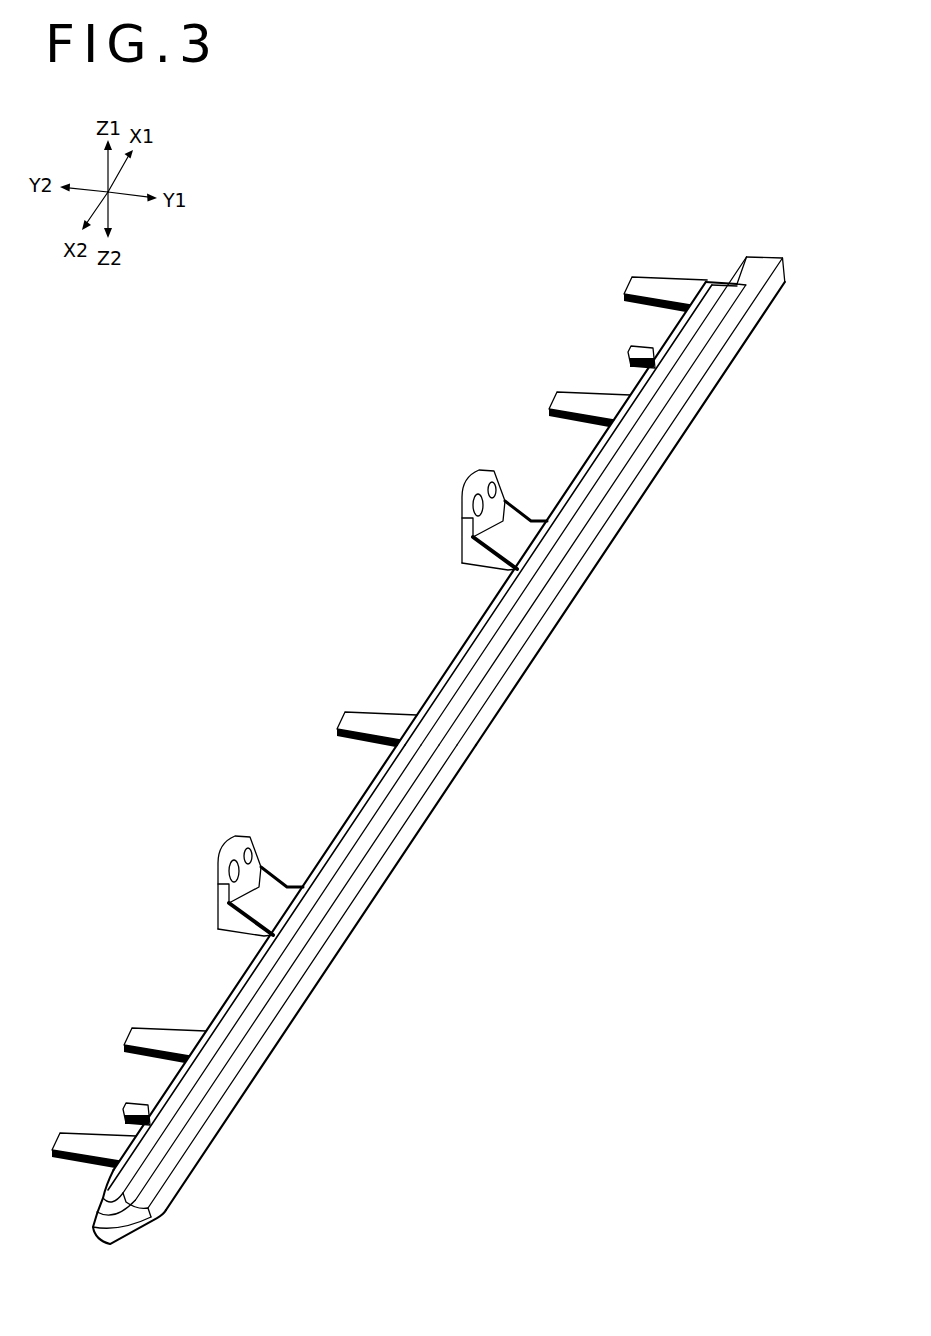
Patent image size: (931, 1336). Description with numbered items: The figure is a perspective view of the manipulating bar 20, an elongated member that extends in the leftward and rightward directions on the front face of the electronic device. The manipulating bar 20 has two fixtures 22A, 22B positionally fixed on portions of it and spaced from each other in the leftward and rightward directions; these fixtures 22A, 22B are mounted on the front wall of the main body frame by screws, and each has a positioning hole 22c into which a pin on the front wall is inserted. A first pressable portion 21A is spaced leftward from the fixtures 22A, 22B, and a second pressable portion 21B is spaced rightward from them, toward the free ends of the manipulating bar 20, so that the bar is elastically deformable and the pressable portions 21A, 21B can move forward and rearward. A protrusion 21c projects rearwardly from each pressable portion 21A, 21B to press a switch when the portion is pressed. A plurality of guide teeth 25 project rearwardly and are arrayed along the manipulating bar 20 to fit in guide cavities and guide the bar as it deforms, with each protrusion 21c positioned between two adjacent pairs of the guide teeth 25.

The manipulating bar 20 is at (760, 224).
The first pressable portion 21A is at (205, 1128).
The second pressable portion 21B is at (718, 368).
The protrusion 21c is at (632, 352).
The fixture 22A is at (270, 868).
The fixture 22B is at (512, 499).
The positioning hole 22c is at (477, 493).
The guide tooth 25 is at (661, 280).